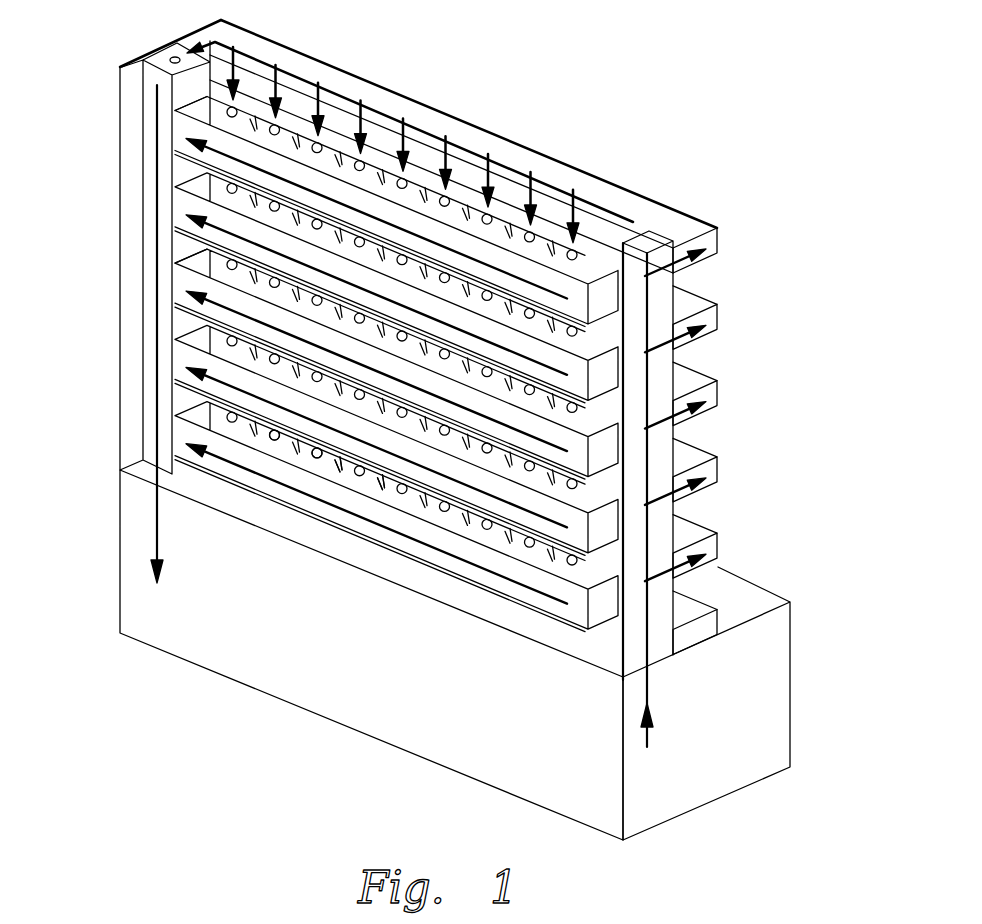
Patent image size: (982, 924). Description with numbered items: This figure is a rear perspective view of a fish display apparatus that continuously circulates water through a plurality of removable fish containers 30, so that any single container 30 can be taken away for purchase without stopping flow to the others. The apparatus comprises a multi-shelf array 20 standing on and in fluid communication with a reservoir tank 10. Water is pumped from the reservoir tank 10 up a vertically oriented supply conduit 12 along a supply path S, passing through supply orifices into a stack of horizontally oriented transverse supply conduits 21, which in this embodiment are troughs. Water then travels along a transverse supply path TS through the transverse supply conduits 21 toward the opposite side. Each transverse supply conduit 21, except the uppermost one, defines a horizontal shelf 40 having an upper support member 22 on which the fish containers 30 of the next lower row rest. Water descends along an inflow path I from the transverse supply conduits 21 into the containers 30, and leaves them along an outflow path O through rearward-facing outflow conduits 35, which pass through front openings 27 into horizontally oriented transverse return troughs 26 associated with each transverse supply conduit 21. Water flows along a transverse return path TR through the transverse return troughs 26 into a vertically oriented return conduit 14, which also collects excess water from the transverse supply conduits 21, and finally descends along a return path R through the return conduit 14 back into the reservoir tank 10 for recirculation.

The reservoir tank 10 is at (757, 673).
The supply conduit 12 is at (643, 236).
The return conduit 14 is at (143, 95).
The multi-shelf array 20 is at (459, 430).
The transverse supply conduit 21 is at (720, 242).
The upper support member 22 is at (687, 455).
The transverse return trough 26 is at (503, 587).
The front openings 27 is at (337, 152).
The fish container 30 is at (370, 478).
The outflow conduit 35 is at (307, 455).
The horizontal shelf 40 is at (710, 548).
The inflow path I is at (406, 135).
The outflow path O is at (470, 235).
The transverse supply path TS is at (548, 182).
The transverse return path TR is at (172, 246).
The return path R is at (157, 523).
The supply path S is at (647, 737).